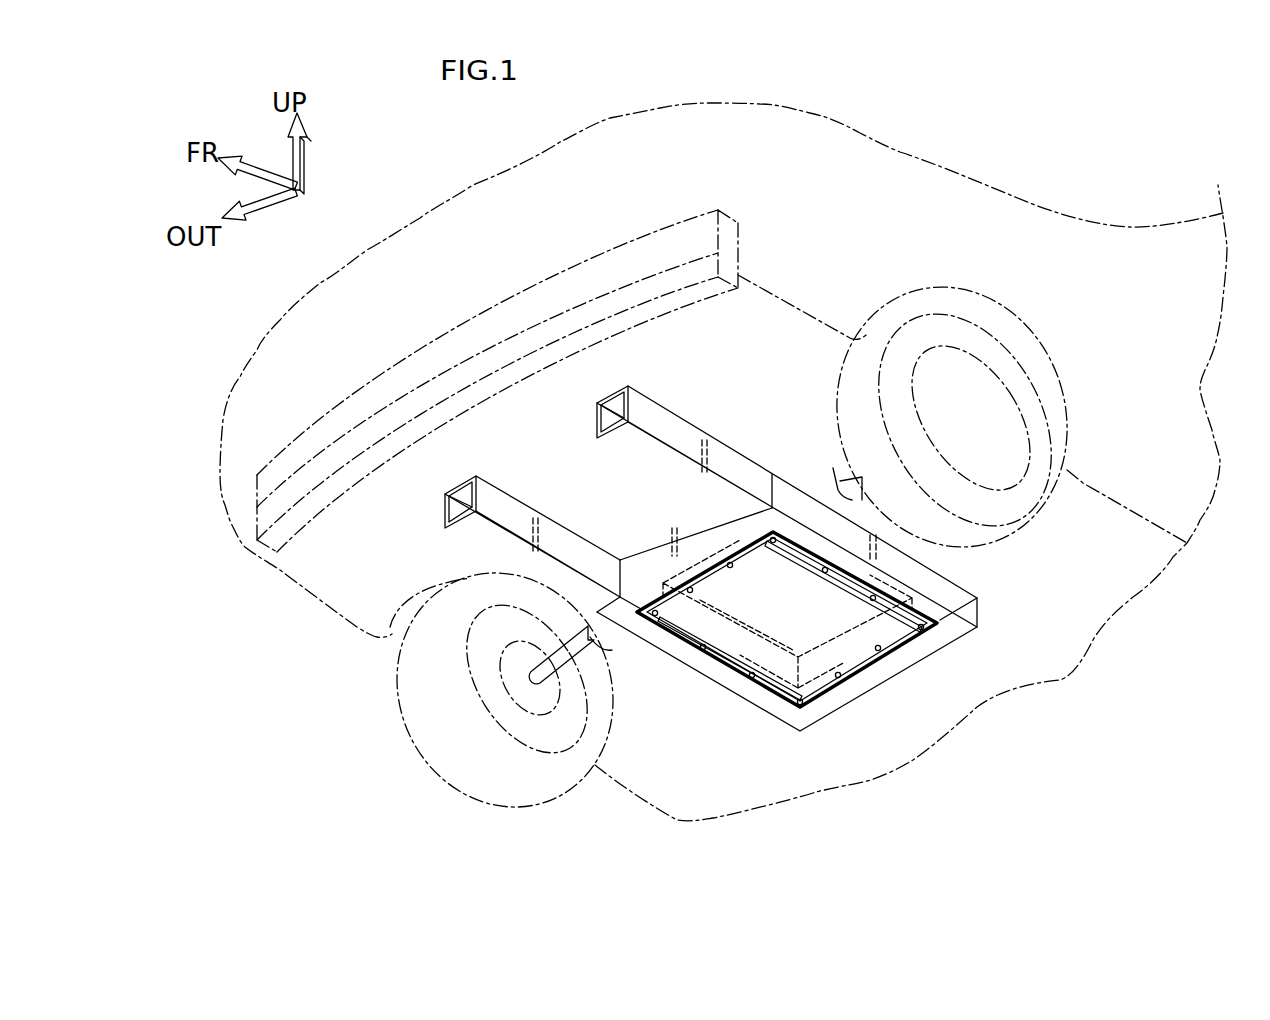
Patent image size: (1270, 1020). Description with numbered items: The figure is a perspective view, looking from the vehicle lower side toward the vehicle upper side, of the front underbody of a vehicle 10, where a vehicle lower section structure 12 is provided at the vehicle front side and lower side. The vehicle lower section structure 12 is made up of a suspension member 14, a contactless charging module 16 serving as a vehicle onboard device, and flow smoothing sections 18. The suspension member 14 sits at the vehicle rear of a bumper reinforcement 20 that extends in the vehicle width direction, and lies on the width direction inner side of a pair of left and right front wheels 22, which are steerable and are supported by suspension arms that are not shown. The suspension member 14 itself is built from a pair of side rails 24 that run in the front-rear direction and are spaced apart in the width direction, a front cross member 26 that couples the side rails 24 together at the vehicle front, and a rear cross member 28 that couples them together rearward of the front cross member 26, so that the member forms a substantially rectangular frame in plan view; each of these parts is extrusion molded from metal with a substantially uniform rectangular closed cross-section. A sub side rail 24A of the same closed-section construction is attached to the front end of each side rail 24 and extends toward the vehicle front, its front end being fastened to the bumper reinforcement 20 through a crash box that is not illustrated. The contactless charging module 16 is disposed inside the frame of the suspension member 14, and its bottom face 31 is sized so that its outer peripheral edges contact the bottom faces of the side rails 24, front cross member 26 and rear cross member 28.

The vehicle 10 is at (898, 152).
The vehicle lower section structure 12 is at (702, 526).
The suspension member 14 is at (702, 535).
The contactless charging module 16 is at (802, 653).
The flow smoothing sections 18 is at (810, 570).
The bumper reinforcement 20 is at (483, 340).
The front wheels 22 is at (1028, 498).
The side rails 24 is at (660, 643).
The sub side rail 24A is at (657, 412).
The front cross member 26 is at (660, 557).
The rear cross member 28 is at (860, 687).
The bottom face 31 is at (780, 573).